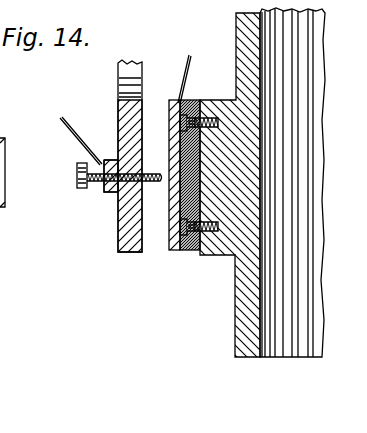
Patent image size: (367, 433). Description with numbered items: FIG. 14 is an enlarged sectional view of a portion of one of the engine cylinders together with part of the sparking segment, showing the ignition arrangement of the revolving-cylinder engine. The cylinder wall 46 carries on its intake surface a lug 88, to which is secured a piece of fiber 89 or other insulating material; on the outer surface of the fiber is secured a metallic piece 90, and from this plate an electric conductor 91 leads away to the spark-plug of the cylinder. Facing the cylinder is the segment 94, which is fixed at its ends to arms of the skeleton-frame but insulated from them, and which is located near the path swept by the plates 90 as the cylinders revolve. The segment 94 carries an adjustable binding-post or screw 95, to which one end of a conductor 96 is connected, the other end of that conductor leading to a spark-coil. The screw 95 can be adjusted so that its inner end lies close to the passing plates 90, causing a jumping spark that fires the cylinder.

The laminated body 46 is at (290, 226).
The lug 88 is at (214, 99).
The piece of fiber 89 is at (188, 100).
The metallic piece 90 is at (172, 236).
The electric conductor 91 is at (180, 98).
The segment 94 is at (118, 229).
The adjustable binding-post or screw 95 is at (77, 180).
The conductor 96 is at (77, 137).